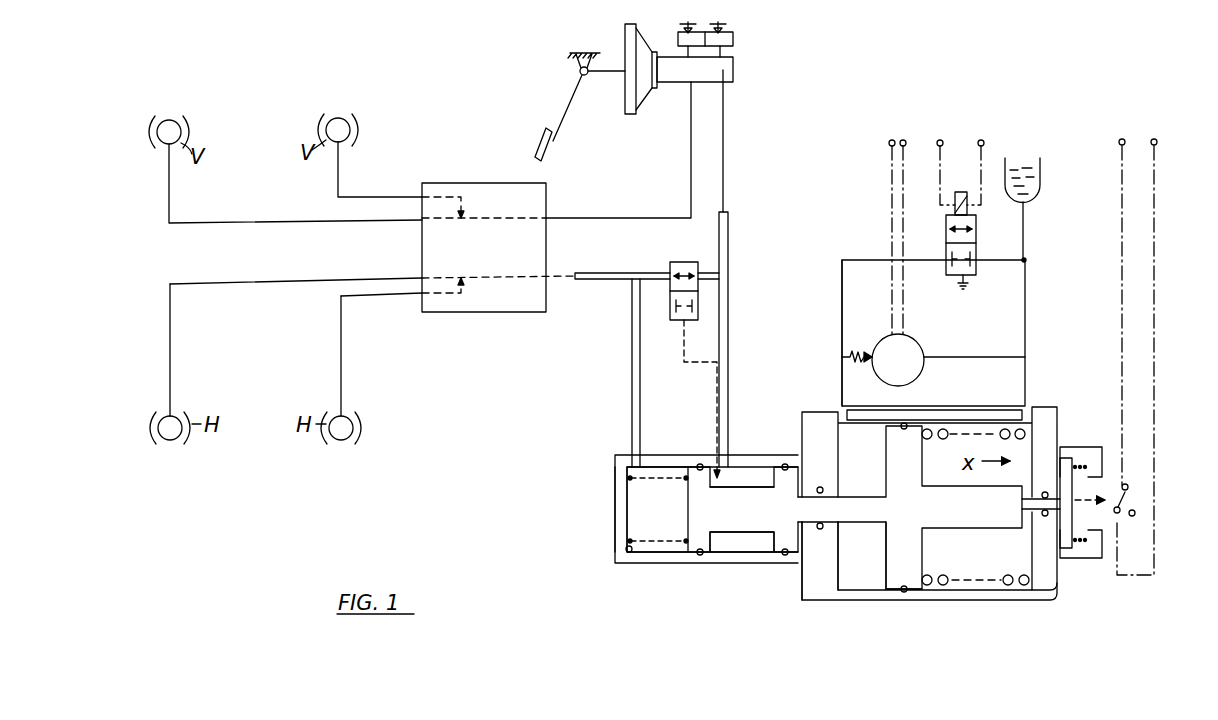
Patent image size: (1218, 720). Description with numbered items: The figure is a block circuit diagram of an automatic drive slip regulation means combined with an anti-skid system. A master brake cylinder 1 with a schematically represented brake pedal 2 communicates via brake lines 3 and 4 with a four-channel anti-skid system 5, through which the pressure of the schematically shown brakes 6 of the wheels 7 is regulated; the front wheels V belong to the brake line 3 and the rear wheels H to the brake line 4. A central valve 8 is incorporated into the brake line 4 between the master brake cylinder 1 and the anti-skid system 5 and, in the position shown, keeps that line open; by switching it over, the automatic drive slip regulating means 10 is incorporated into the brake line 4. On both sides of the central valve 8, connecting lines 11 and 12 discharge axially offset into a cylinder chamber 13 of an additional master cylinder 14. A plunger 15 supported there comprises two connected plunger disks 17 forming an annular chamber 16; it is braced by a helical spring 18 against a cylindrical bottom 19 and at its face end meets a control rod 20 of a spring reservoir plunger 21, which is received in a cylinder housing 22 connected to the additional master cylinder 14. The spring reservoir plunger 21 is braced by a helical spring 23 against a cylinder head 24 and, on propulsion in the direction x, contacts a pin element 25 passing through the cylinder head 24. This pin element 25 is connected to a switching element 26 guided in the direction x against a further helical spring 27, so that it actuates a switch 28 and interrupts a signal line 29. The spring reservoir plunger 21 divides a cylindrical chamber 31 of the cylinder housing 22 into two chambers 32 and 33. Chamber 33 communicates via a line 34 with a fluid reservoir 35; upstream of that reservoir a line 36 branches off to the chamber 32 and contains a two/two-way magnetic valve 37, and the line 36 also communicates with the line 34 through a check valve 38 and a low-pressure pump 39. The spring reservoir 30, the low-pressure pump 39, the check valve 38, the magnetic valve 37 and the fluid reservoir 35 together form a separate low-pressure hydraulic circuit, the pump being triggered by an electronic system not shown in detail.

The master brake cylinder 1 is at (669, 86).
The brake pedal 2 is at (570, 109).
The brake line 3 is at (690, 152).
The brake line 4 is at (725, 154).
The four-channel anti-skid system 5 is at (432, 300).
The brakes 6 is at (152, 432).
The wheels 7 is at (172, 442).
The central valve 8 is at (674, 262).
The automatic drive slip regulating means 10 is at (807, 247).
The connecting line 11 is at (630, 386).
The connecting line 12 is at (729, 378).
The cylinder chamber 13 is at (670, 519).
The additional master cylinder 14 is at (657, 567).
The plunger 15 is at (741, 486).
The annular chamber 16 is at (750, 541).
The plunger disks 17 is at (695, 540).
The helical spring 18 is at (628, 552).
The cylindrical bottom 19 is at (623, 503).
The control rod 20 is at (848, 503).
The spring reservoir plunger 21 is at (882, 570).
The cylinder housing 22 is at (812, 592).
The helical spring 23 is at (945, 586).
The cylinder head 24 is at (1050, 590).
The pin element 25 is at (1036, 497).
The switching element 26 is at (1070, 548).
The helical spring 27 is at (1088, 558).
The switch 28 is at (1130, 497).
The signal line 29 is at (1120, 366).
The spring reservoir 30 is at (1018, 604).
The cylindrical chamber 31 is at (916, 594).
The cylindrical chamber 32 is at (852, 582).
The cylindrical chamber 33 is at (974, 571).
The line 34 is at (1027, 302).
The fluid reservoir 35 is at (1042, 175).
The line 36 is at (842, 292).
The 2/2-way magnetic valve 37 is at (976, 272).
The check valve 38 is at (850, 350).
The low-pressure pump 39 is at (912, 352).